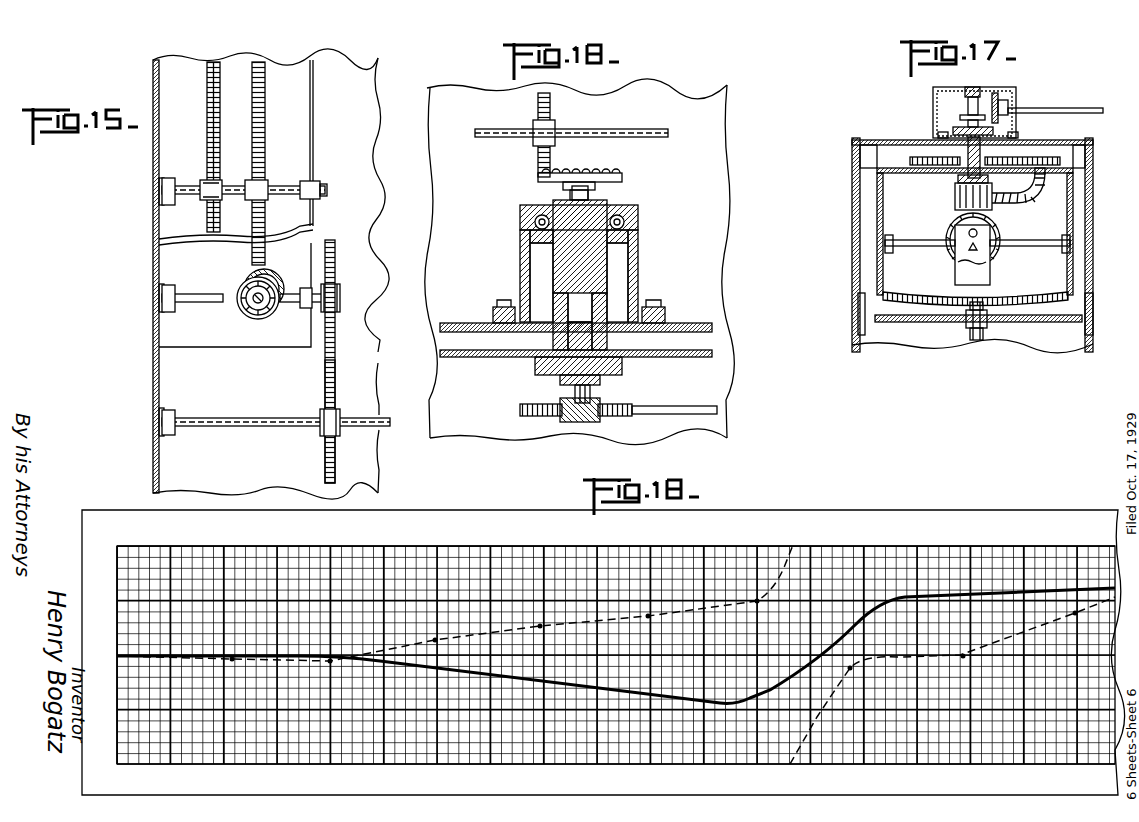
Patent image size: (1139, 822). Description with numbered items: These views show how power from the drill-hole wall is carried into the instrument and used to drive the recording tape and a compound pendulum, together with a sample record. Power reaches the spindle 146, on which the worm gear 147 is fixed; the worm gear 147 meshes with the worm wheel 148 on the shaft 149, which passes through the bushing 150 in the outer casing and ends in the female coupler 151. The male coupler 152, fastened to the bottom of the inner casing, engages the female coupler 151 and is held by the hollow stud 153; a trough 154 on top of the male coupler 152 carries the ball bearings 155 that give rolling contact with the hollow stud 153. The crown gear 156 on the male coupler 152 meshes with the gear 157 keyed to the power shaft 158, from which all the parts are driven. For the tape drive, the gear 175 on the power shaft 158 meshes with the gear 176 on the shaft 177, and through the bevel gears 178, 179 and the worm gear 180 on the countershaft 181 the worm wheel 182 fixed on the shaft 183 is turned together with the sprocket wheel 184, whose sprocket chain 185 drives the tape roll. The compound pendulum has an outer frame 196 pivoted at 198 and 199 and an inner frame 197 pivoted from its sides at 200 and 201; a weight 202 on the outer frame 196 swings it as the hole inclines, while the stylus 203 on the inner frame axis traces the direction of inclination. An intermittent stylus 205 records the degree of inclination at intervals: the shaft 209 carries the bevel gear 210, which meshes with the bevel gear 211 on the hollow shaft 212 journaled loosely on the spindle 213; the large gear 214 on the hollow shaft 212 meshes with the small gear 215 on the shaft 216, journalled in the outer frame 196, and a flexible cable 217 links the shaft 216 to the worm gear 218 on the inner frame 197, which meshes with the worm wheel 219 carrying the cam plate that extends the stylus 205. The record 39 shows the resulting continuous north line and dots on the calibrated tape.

In FIG. 15, the sprocket chain 185 is at (207, 104).
In FIG. 15, the worm wheel 182 is at (263, 159).
In FIG. 15, the shaft 183 is at (327, 190).
In FIG. 15, the sprocket wheel 184 is at (207, 228).
In FIG. 15, the bevel gear 178 is at (278, 282).
In FIG. 15, the bevel gear 179 is at (242, 290).
In FIG. 15, the worm gear 180 is at (262, 313).
In FIG. 15, the countershaft 181 is at (247, 313).
In FIG. 15, the shaft 177 is at (341, 297).
In FIG. 15, the gear 176 is at (336, 331).
In FIG. 15, the gear 175 is at (336, 384).
In FIG. 15, the power shaft 158 is at (270, 429).
In FIG. 16, the power shaft 158 is at (668, 133).
In FIG. 16, the gear 157 is at (551, 109).
In FIG. 16, the crown gear 156 is at (622, 178).
In FIG. 16, the trough 154 is at (638, 213).
In FIG. 16, the ball bearings 155 is at (638, 228).
In FIG. 16, the male coupler 152 is at (553, 262).
In FIG. 16, the hollow stud 153 is at (638, 278).
In FIG. 16, the female coupler 151 is at (607, 338).
In FIG. 16, the bushing 150 is at (610, 380).
In FIG. 16, the shaft 149 is at (573, 392).
In FIG. 16, the worm wheel 148 is at (520, 411).
In FIG. 16, the worm gear 147 is at (585, 420).
In FIG. 16, the spindle 146 is at (673, 407).
In FIG. 17, the pivot 198 is at (965, 95).
In FIG. 17, the bevel gear 210 is at (1000, 92).
In FIG. 17, the shaft 209 is at (1043, 108).
In FIG. 17, the spindle 213 is at (965, 104).
In FIG. 17, the bevel gear 211 is at (953, 130).
In FIG. 17, the large gear 214 is at (910, 161).
In FIG. 17, the hollow shaft 212 is at (968, 153).
In FIG. 17, the small gear 215 is at (1030, 161).
In FIG. 17, the worm gear 218 is at (955, 194).
In FIG. 17, the shaft 216 is at (1030, 183).
In FIG. 17, the flexible cable 217 is at (1033, 197).
In FIG. 17, the pivot 201 is at (893, 240).
In FIG. 17, the stylus 203 is at (962, 240).
In FIG. 17, the worm wheel 219 is at (1002, 232).
In FIG. 17, the inner frame 197 is at (955, 278).
In FIG. 17, the intermittent stylus 205 is at (993, 253).
In FIG. 17, the pivot 200 is at (1060, 247).
In FIG. 17, the outer frame 196 is at (1005, 298).
In FIG. 17, the weight 202 is at (1035, 305).
In FIG. 17, the pivot 199 is at (968, 301).
In FIG. 18, the chart 39 is at (832, 510).